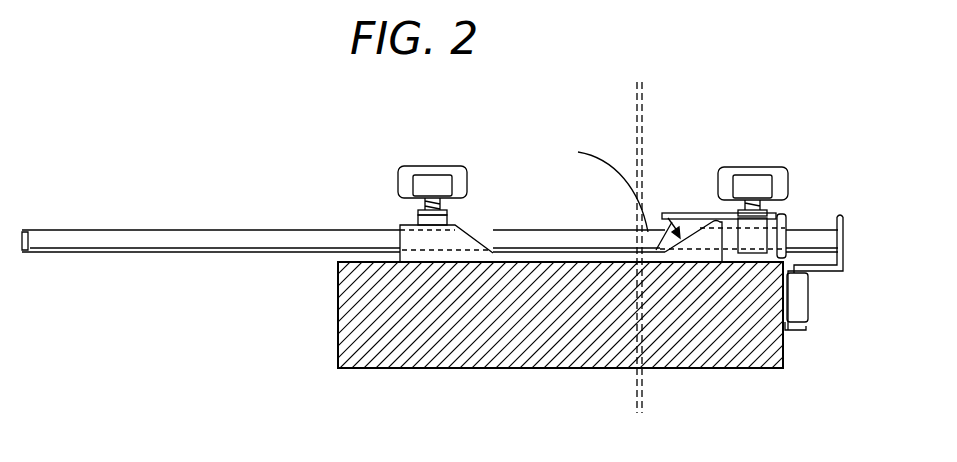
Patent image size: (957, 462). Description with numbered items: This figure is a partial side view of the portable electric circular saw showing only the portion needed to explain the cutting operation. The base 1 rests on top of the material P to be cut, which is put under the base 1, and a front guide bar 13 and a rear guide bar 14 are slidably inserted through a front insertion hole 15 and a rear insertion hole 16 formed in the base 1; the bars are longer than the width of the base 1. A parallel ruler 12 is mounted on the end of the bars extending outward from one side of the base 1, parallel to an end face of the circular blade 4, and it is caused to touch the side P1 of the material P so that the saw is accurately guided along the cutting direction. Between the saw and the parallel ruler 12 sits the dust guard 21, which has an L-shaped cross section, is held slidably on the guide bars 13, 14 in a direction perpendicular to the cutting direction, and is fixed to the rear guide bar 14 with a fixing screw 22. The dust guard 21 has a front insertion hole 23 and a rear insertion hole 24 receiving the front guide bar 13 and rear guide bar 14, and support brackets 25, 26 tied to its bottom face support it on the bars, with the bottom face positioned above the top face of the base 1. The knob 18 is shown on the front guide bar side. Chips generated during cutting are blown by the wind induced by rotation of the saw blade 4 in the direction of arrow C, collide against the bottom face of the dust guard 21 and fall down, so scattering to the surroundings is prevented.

The base 1 is at (470, 258).
The circular blade 4 is at (637, 121).
The parallel ruler 12 is at (808, 301).
The front guide bar 13 is at (430, 202).
The rear guide bar 14 is at (223, 233).
The front insertion hole 15 is at (478, 229).
The rear insertion hole 16 is at (457, 223).
The clamp knob 18 is at (437, 167).
The dust guard 21 is at (690, 212).
The fixing screw 22 is at (757, 167).
The front insertion hole 23 is at (848, 226).
The rear insertion hole 24 is at (785, 219).
The support bracket 25 is at (820, 205).
The support bracket 26 is at (762, 222).
The chip blowing direction C is at (619, 195).
The material to be cut P is at (508, 336).
The side of the material to be cut P1 is at (786, 340).